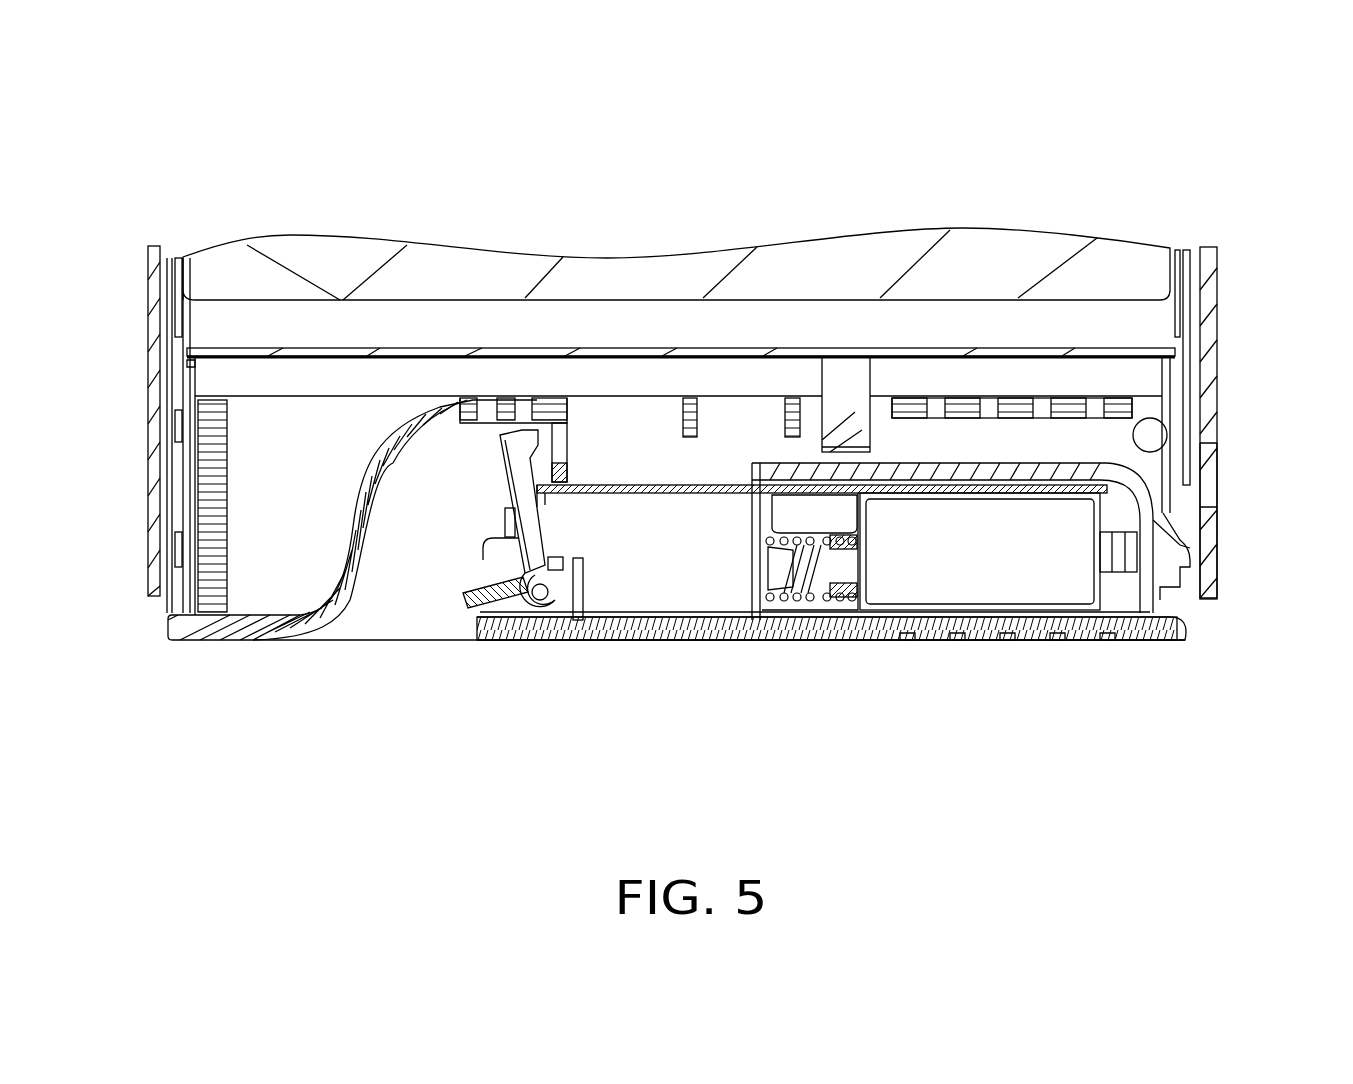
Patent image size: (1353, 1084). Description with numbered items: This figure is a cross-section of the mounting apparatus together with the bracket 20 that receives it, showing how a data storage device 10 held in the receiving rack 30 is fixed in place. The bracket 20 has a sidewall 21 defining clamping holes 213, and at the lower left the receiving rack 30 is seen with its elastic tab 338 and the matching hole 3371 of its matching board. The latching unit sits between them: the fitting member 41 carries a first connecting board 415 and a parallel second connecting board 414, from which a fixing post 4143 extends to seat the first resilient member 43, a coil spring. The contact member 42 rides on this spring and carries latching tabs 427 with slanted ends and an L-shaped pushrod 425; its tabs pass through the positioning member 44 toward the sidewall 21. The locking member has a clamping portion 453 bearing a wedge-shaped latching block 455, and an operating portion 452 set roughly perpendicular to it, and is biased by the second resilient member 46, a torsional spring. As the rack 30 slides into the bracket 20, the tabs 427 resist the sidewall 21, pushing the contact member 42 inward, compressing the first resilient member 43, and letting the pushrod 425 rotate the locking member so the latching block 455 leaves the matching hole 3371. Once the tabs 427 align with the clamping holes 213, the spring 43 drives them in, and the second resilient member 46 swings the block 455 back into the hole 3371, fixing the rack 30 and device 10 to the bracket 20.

The data storage device 10 is at (995, 265).
The bracket 20 is at (1222, 272).
The sidewall 21 is at (1210, 347).
The clamping holes 213 is at (1208, 462).
The receiving rack 30 is at (248, 630).
The elastic tab 338 is at (848, 440).
The matching hole 3371 is at (567, 447).
The fitting member 41 is at (1123, 627).
The second connecting board 414 is at (760, 552).
The fixing post 4143 is at (777, 562).
The first connecting board 415 is at (577, 590).
The contact member 42 is at (995, 580).
The pushrod 425 is at (637, 493).
The latching tab 427 is at (1185, 548).
The first resilient member 43 is at (803, 567).
The positioning member 44 is at (1062, 477).
The operating portion 452 is at (478, 605).
The clamping portion 453 is at (513, 485).
The latching block 455 is at (517, 440).
The second resilient member 46 is at (533, 610).